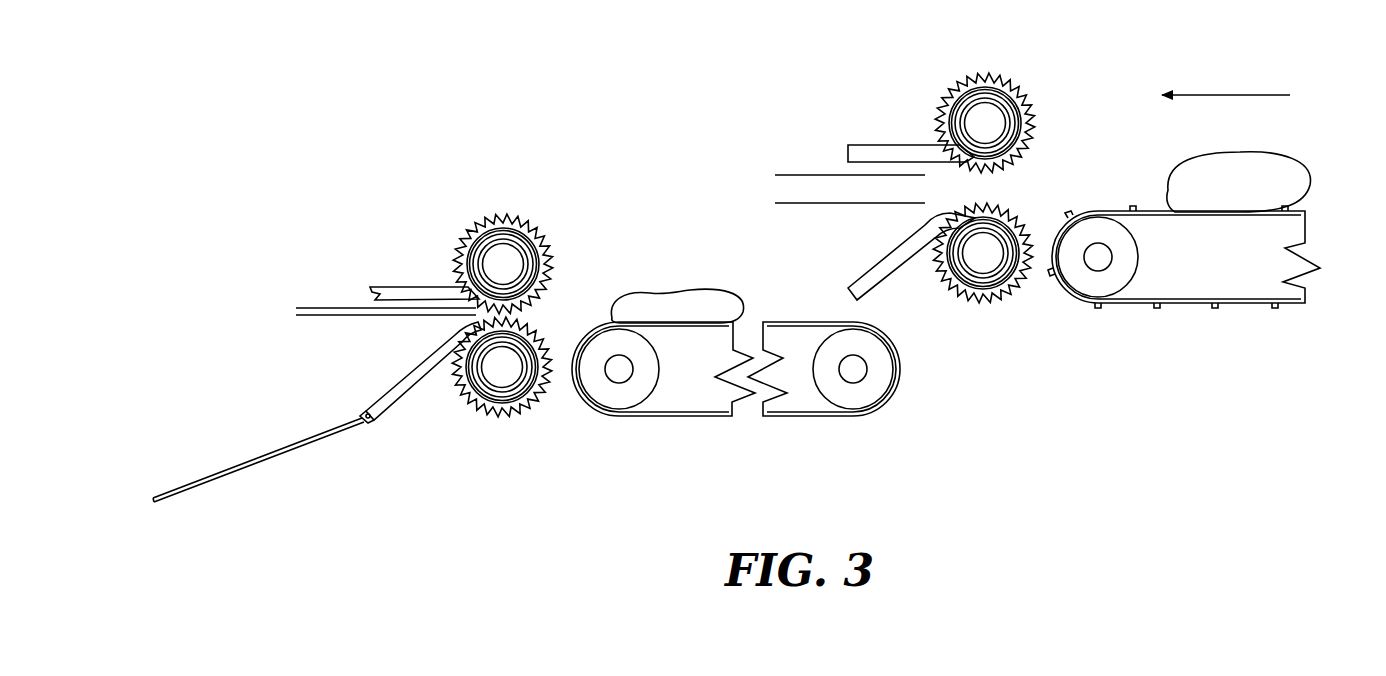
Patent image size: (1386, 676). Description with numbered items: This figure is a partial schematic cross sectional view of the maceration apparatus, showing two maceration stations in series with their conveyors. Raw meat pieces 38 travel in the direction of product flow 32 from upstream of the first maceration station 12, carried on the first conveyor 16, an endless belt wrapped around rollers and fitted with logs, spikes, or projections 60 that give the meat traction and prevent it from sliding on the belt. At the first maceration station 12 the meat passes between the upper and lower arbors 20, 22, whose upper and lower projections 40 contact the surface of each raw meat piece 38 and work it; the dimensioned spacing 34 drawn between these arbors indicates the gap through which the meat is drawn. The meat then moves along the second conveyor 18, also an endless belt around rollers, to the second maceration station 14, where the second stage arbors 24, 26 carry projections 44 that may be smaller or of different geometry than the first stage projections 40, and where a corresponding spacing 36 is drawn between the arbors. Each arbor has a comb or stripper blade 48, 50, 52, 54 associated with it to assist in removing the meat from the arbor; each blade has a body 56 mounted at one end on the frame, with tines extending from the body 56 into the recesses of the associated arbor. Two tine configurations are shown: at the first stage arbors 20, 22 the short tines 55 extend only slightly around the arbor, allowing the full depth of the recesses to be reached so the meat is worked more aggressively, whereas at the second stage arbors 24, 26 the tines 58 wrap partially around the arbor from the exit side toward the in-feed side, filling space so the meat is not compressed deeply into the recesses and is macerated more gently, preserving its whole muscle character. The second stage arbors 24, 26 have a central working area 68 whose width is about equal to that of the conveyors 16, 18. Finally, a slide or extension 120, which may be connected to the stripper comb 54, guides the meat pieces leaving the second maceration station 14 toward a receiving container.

The first maceration station 12 is at (1024, 62).
The second maceration station 14 is at (541, 196).
The first conveyor 16 is at (1265, 301).
The second conveyor 18 is at (788, 323).
The upper arbor 20 is at (941, 96).
The lower arbor 22 is at (961, 301).
The second stage arbor 24 is at (456, 226).
The second stage arbor 26 is at (449, 396).
The product flow 32 is at (1230, 90).
The first gap between rollers 34 is at (785, 236).
The second gap between rollers 36 is at (543, 316).
The raw meat pieces 38 is at (692, 292).
The first stage projections 40 is at (1030, 107).
The projections 44 is at (554, 248).
The stripper blade 48 is at (885, 145).
The stripper blade 50 is at (872, 268).
The stripper blade 52 is at (418, 288).
The stripper comb 54 is at (395, 386).
The tines 55 is at (964, 165).
The body 56 is at (378, 421).
The tines 58 is at (548, 295).
The projections 60 is at (1155, 307).
The central working area 68 is at (1098, 307).
The extension 120 is at (258, 462).